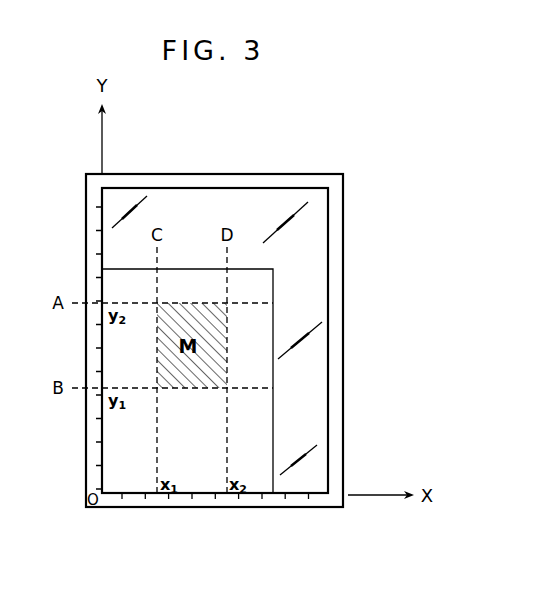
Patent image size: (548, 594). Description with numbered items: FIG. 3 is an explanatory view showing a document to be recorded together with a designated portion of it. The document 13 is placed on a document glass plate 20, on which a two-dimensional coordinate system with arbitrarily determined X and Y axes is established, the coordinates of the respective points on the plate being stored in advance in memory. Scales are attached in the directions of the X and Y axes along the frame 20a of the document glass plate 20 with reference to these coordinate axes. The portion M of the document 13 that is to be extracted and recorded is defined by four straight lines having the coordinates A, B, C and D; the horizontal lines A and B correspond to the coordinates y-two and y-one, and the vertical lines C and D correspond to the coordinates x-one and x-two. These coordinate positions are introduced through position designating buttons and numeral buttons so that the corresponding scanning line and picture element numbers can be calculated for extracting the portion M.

The document glass plate 20 is at (258, 166).
The frame 20a is at (339, 243).
The document 13 is at (197, 484).